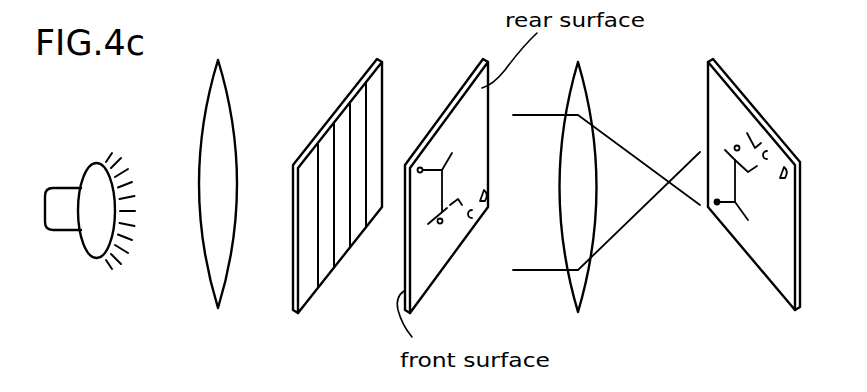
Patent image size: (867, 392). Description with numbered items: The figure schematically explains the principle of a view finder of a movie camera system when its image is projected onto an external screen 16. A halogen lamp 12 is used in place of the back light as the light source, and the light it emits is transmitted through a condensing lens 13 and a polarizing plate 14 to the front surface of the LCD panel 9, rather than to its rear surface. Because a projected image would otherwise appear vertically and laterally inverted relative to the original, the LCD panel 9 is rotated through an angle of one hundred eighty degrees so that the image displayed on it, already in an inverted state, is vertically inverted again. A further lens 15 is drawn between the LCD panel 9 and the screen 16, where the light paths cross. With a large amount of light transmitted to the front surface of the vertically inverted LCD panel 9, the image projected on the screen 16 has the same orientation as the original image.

The halogen lamp 12 is at (95, 175).
The condensing lens 13 is at (220, 83).
The polarizing plate 14 is at (312, 277).
The LCD panel 9 is at (437, 255).
The projection lens 15 is at (580, 97).
The screen 16 is at (742, 115).